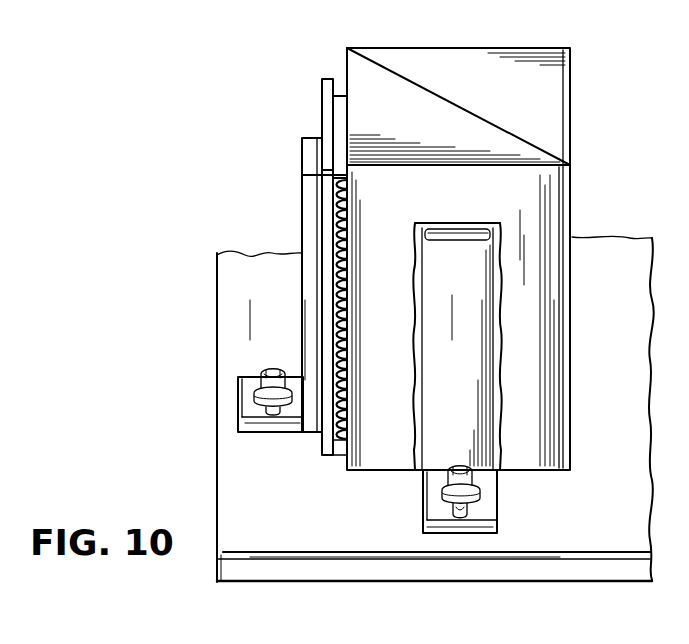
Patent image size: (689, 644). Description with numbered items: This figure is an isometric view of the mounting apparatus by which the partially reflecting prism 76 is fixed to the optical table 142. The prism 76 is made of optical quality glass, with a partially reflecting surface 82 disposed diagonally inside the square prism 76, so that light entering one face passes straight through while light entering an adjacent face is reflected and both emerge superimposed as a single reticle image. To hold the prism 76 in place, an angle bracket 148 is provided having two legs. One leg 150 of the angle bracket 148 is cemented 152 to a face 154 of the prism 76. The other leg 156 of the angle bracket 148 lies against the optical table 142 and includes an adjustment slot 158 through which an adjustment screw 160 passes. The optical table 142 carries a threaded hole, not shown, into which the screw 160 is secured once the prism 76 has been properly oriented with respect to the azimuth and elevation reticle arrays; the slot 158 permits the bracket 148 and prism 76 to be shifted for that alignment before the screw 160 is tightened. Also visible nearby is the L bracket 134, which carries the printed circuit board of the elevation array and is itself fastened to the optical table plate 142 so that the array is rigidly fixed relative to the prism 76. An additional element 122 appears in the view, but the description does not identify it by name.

The housing 76 is at (511, 48).
The diagonal brace 82 is at (413, 82).
The rear wall 154 is at (542, 218).
The channel 152 is at (500, 305).
The inner slide member 150 is at (483, 393).
The fastener assembly 148 is at (505, 492).
The bottom bracket 156 is at (496, 495).
The bolt head 160 is at (445, 488).
The bolt shank 158 is at (455, 510).
The mounting bolt bracket 134 is at (242, 432).
The guide rail with spring 122 is at (330, 440).
The base plate 142 is at (540, 566).